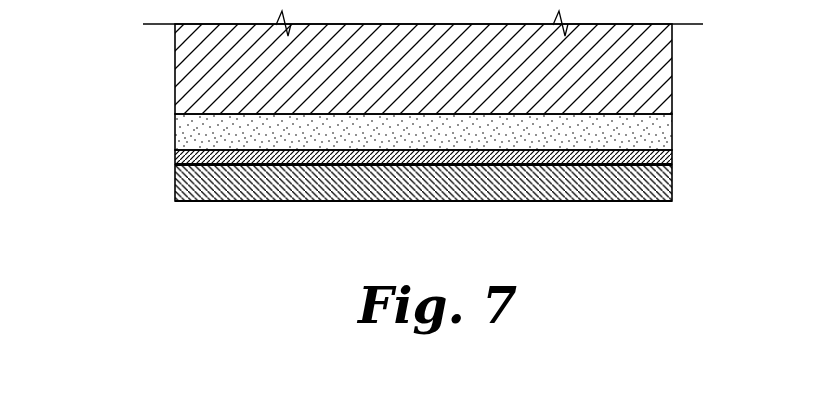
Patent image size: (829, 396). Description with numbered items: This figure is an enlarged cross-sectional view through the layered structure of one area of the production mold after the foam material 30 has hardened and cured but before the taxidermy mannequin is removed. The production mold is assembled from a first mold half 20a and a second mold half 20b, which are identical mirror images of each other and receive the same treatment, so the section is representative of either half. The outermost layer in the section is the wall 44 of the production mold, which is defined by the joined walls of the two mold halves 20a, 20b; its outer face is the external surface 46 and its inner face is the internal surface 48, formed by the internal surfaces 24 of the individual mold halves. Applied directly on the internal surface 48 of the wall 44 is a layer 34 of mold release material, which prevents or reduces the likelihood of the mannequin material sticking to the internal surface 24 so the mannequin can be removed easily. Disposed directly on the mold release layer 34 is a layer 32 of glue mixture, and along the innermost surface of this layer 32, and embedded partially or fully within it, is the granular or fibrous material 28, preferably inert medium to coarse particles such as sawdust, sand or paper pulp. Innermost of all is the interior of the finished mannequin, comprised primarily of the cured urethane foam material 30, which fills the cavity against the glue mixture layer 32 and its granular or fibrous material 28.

The first mold half 20a is at (351, 192).
The second mold half 20b is at (178, 188).
The internal surface 24 is at (424, 135).
The granular or fibrous material 28 is at (664, 122).
The foam material 30 is at (663, 81).
The glue mixture layer 32 is at (665, 140).
The mold release layer 34 is at (424, 166).
The wall 44 is at (385, 193).
The external surface 46 is at (206, 202).
The internal surface 48 is at (175, 164).